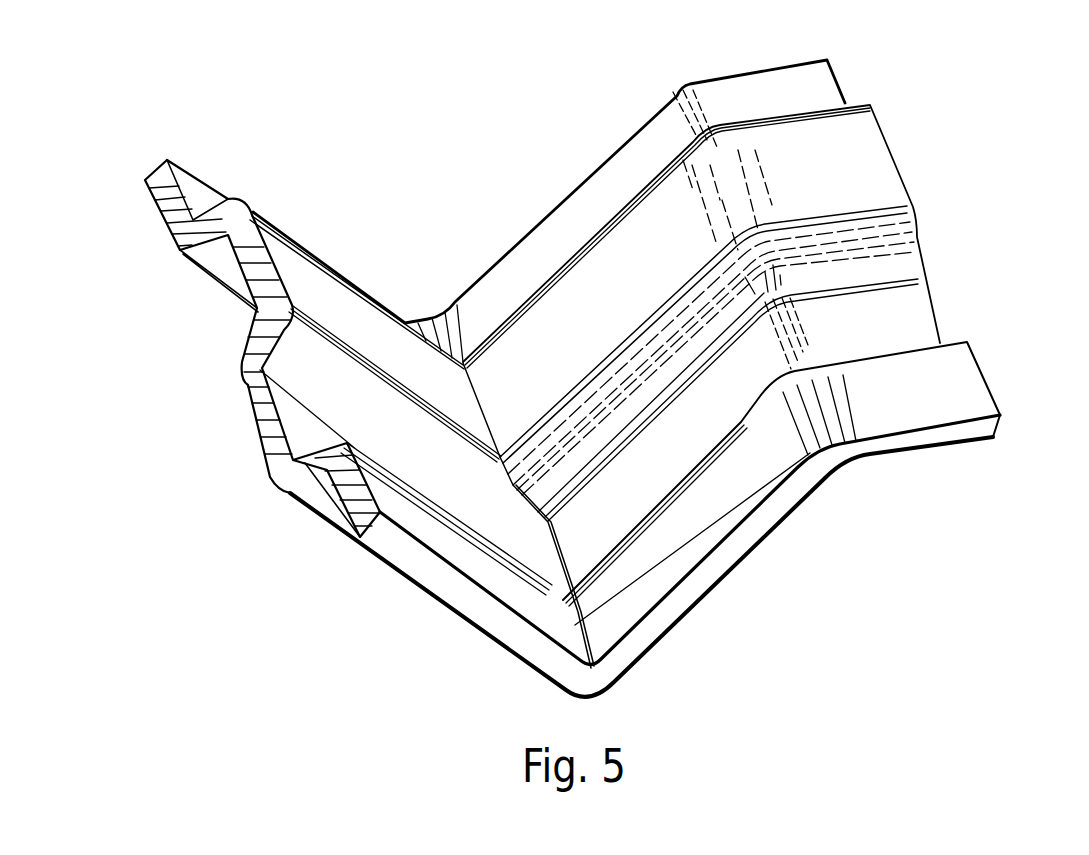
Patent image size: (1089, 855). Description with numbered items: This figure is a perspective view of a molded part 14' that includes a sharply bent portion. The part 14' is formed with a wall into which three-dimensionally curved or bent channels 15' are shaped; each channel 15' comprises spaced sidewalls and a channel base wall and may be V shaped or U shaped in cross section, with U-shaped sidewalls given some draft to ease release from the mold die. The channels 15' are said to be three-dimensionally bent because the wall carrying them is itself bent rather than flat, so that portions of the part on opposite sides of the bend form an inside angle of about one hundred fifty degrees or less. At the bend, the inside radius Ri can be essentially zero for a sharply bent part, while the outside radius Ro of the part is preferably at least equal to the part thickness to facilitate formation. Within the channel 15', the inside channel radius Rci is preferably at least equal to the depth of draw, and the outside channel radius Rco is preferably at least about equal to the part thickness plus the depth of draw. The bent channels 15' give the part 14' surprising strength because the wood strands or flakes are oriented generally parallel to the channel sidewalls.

The part 14' is at (572, 394).
The channel 15' is at (262, 348).
The outside radius of the part Ro is at (840, 436).
The inside radius of the curved or bent portion Ri is at (585, 652).
The inside radius of the channel Rci is at (560, 543).
The outside radius of the channel Rco is at (510, 648).